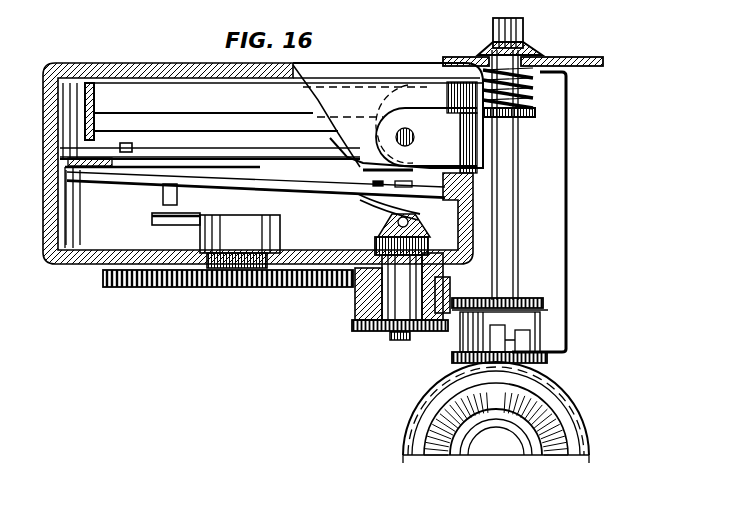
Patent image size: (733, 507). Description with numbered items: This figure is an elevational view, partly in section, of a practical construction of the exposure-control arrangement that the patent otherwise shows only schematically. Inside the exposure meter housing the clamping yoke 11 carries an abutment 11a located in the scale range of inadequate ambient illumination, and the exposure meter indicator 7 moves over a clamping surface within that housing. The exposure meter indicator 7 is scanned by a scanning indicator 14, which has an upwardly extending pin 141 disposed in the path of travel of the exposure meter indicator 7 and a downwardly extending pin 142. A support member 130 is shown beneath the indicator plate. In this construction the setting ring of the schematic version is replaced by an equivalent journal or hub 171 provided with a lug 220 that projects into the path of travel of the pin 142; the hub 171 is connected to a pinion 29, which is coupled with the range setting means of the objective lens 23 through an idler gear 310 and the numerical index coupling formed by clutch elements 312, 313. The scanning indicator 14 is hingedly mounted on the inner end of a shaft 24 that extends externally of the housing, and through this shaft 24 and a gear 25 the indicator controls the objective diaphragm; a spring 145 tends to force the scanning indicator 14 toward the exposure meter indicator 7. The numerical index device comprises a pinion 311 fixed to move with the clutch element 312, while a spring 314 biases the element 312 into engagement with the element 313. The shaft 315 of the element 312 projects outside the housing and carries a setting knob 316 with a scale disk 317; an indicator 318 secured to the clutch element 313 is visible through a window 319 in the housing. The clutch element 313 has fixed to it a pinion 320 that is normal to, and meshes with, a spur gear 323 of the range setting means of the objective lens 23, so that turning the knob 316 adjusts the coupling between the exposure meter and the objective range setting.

The clamping yoke 11 is at (85, 90).
The abutment 11a is at (85, 122).
The exposure meter indicator 7 is at (255, 154).
The pin 141 is at (128, 150).
The support member 130 is at (99, 172).
The pin 142 is at (165, 196).
The journal or hub 171 is at (220, 222).
The scanning indicator 14 is at (312, 190).
The lug 220 is at (160, 221).
The spring 145 is at (380, 225).
The pinion 29 is at (205, 288).
The idler gear 310 is at (354, 300).
The gear 25 is at (352, 325).
The shaft or hub 24 is at (388, 323).
The clutch element 313 is at (462, 342).
The pinion 320 is at (452, 357).
The spur gear 323 is at (556, 374).
The objective lens 23 is at (572, 402).
The pinion 311 is at (548, 302).
The clutch element 312 is at (548, 328).
The setting knob 316 is at (493, 30).
The scale disk 317 is at (530, 48).
The window 319 is at (560, 60).
The indicator 318 is at (567, 92).
The spring 314 is at (532, 96).
The shaft 315 is at (508, 122).